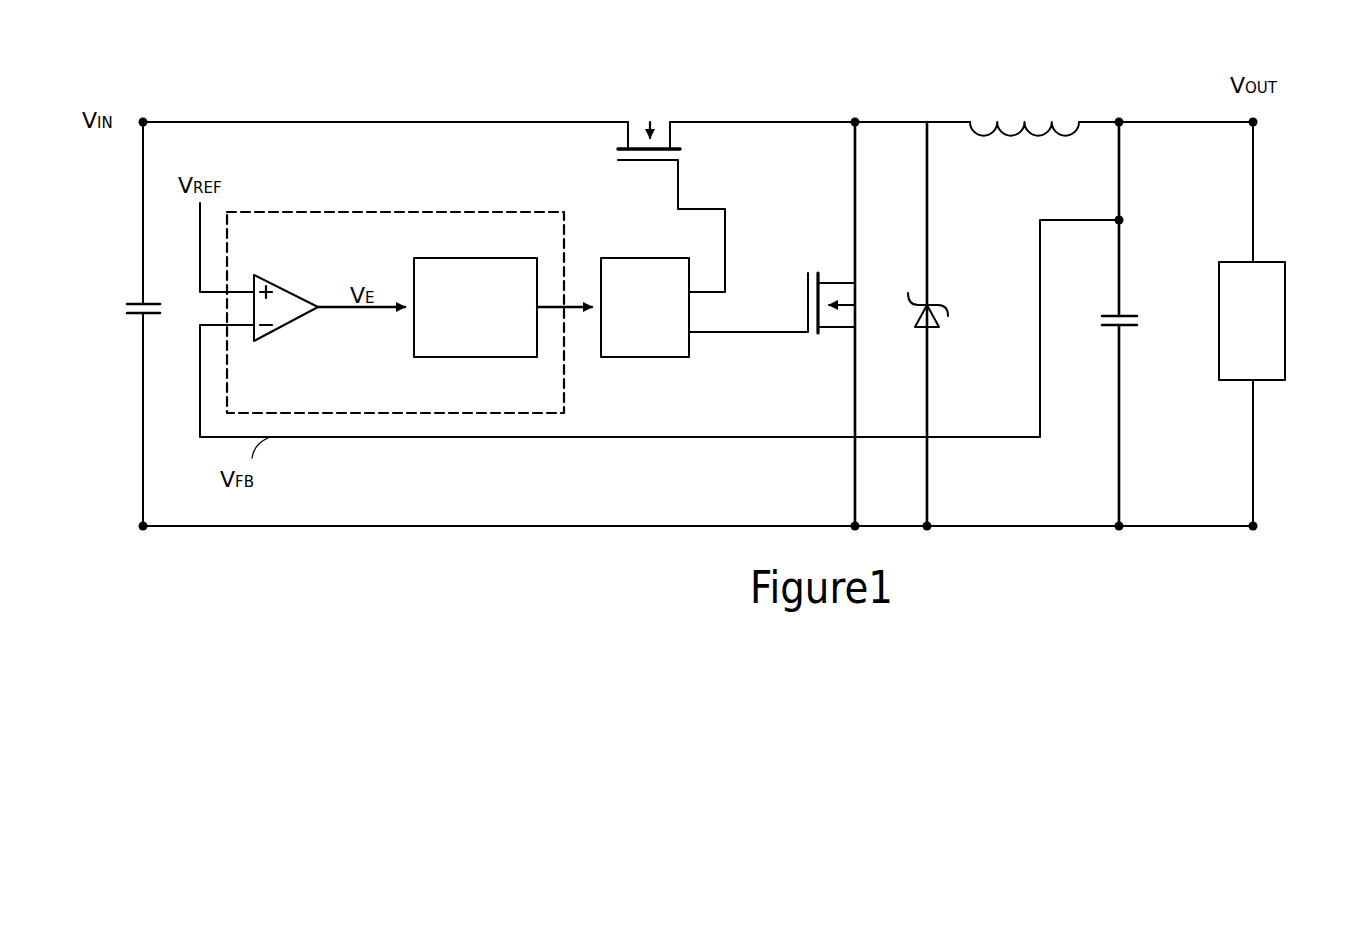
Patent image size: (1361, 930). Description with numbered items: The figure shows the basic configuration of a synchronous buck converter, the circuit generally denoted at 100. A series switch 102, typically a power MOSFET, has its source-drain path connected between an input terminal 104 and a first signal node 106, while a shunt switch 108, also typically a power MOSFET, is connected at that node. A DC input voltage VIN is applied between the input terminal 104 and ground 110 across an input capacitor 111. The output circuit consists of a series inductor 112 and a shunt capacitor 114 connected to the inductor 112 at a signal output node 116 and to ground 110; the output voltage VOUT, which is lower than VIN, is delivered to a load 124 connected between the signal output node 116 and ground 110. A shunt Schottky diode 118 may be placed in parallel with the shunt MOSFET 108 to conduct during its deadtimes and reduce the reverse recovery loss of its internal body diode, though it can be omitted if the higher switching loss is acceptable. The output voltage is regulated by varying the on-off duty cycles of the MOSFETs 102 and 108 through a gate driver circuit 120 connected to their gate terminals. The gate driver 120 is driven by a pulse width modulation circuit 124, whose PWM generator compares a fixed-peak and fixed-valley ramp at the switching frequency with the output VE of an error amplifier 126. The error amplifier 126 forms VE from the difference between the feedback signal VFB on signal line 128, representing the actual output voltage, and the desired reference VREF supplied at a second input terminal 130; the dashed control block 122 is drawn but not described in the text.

The synchronous buck converter circuit 100 is at (541, 68).
The series switch 102 is at (634, 161).
The input terminal 104 is at (144, 118).
The first signal node 106 is at (854, 118).
The shunt switch 108 is at (808, 277).
The ground 110 is at (220, 527).
The input capacitor 111 is at (128, 316).
The series inductor 112 is at (1022, 119).
The shunt capacitor 114 is at (1127, 326).
The signal output node 116 is at (1118, 118).
The Schottky diode 118 is at (940, 308).
The gate driver circuit 120 is at (647, 358).
The control circuit 122 is at (396, 206).
The pulse width modulation circuit 124 is at (478, 358).
The error amplifier 126 is at (290, 328).
The signal line 128 is at (614, 438).
The second input terminal 130 is at (200, 260).